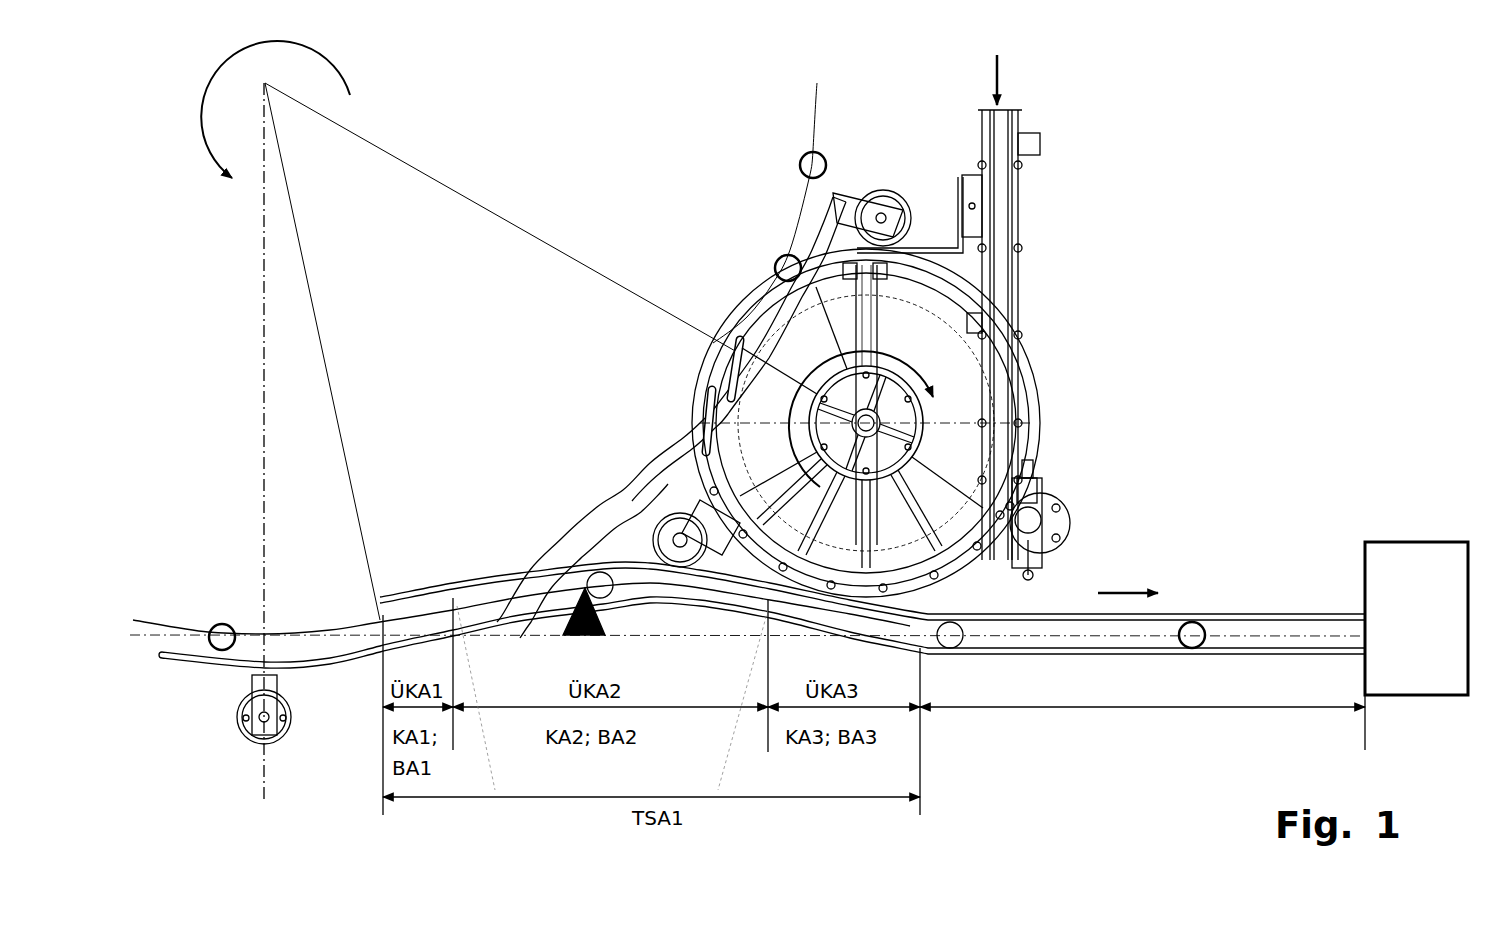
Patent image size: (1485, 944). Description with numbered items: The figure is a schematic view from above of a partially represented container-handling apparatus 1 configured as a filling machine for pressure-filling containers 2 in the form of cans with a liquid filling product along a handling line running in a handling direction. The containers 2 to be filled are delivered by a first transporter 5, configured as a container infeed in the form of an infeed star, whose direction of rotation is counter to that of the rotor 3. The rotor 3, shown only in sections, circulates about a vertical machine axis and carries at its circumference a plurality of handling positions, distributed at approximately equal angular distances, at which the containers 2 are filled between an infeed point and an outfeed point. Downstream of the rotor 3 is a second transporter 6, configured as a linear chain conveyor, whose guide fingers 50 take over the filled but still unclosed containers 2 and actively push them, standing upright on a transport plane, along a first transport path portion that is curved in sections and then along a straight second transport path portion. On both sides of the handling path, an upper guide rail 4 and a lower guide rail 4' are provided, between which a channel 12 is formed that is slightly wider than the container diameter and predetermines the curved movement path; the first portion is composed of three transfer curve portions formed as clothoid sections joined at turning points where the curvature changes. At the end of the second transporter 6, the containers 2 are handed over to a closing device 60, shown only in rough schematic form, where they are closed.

The container-handling apparatus 1 is at (203, 203).
The container 2 is at (807, 166).
The rotor 3 is at (519, 459).
The upper guide rail 4 is at (749, 360).
The lower guide rail 4' is at (762, 676).
The first transporter 5 is at (1042, 355).
The second transporter 6 is at (1022, 775).
The channel 12 is at (882, 648).
The guide finger 50 is at (584, 592).
The closing device 60 is at (1421, 631).